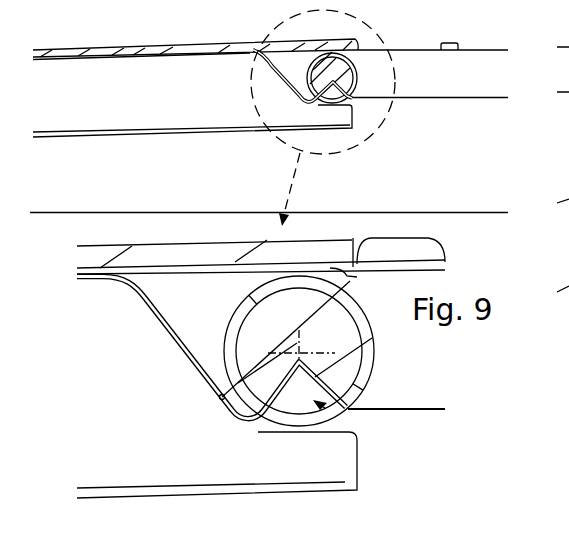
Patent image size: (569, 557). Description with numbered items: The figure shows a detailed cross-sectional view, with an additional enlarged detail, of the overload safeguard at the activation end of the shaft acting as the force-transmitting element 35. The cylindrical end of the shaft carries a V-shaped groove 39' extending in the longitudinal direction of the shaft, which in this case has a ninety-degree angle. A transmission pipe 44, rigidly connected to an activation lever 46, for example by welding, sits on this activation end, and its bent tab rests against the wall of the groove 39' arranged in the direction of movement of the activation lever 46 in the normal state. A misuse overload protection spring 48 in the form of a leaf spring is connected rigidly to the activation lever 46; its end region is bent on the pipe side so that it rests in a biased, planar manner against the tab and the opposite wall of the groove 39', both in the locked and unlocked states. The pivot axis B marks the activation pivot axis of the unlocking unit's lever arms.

The force-transmitting element 35 is at (312, 323).
The transmission pipe 44 is at (380, 358).
The activation lever 46 is at (131, 258).
The misuse overload protection spring 48 is at (178, 347).
The V-shaped groove 39' is at (397, 447).
The activation pivot axis B is at (222, 397).